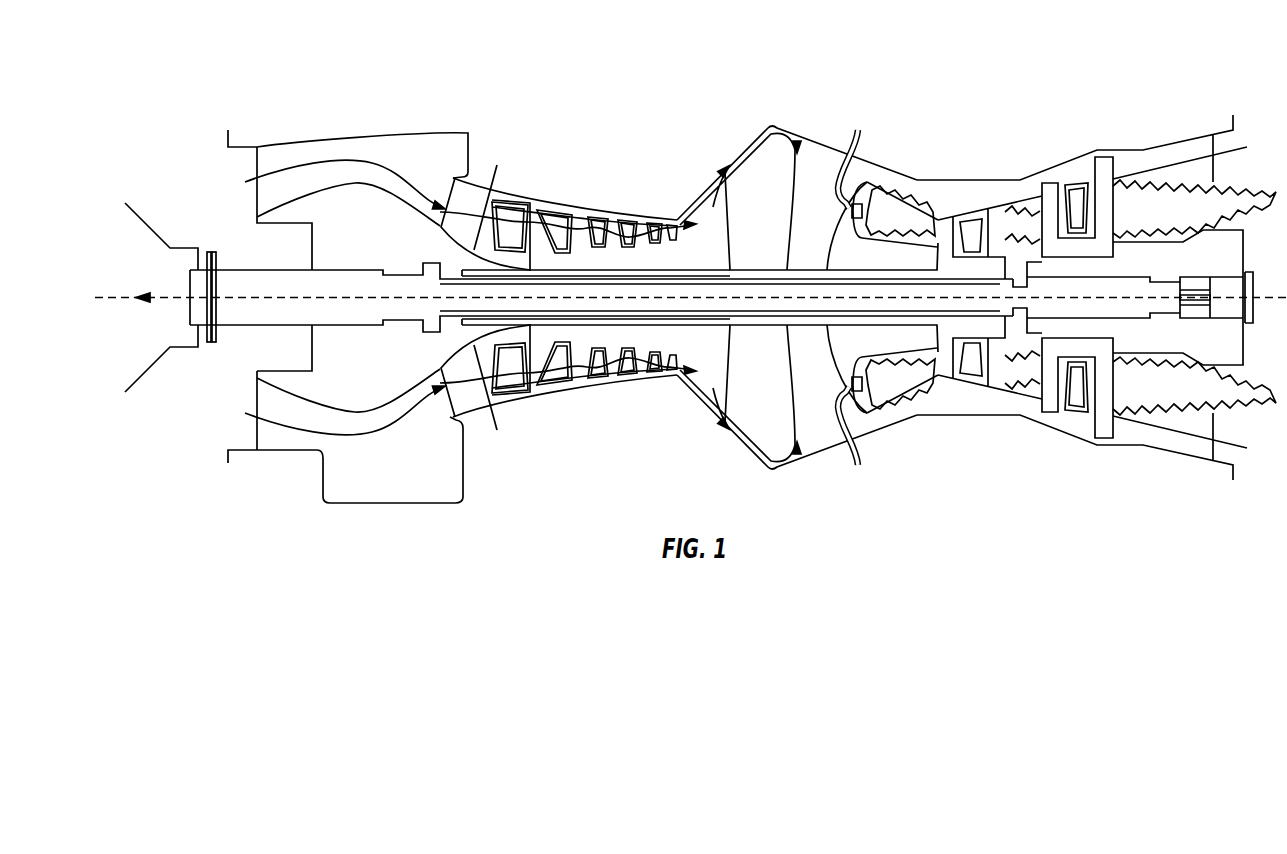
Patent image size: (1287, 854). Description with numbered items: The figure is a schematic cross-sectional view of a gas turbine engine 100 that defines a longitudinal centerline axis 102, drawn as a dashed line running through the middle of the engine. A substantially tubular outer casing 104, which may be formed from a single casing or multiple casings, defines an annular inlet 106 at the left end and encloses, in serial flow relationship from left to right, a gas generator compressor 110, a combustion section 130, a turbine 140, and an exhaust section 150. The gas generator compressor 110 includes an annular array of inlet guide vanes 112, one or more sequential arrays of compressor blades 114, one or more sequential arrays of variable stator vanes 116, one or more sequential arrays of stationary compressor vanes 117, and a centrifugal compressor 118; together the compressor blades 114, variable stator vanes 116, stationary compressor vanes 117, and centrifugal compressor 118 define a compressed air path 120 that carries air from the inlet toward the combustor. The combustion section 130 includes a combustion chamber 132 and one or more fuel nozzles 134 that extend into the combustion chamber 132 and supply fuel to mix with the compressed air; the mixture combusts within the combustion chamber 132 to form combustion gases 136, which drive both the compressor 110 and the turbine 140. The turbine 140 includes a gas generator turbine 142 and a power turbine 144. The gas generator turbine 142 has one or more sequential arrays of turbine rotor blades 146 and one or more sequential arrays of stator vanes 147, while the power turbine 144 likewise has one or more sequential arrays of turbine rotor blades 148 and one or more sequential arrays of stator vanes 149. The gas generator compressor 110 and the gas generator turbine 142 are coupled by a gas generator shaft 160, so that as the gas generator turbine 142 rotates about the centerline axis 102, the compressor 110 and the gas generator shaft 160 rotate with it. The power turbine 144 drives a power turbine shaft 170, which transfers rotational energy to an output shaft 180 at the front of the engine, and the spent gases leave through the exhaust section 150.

The gas turbine engine 100 is at (252, 502).
The centerline axis 102 is at (121, 295).
The outer casing 104 is at (555, 205).
The annular inlet 106 is at (262, 161).
The gas generator compressor 110 is at (560, 398).
The inlet guide vanes 112 is at (504, 357).
The compressor blades 114 is at (545, 210).
The variable stator vanes 116 is at (600, 383).
The stationary compressor vanes 117 is at (654, 225).
The centrifugal compressor 118 is at (697, 400).
The compressed air path 120 is at (474, 250).
The combustion section 130 is at (823, 415).
The combustion chamber 132 is at (882, 188).
The fuel nozzles 134 is at (845, 190).
The combustion gases 136 is at (907, 390).
The turbine 140 is at (1066, 425).
The gas generator turbine 142 is at (1005, 377).
The power turbine 144 is at (1120, 180).
The turbine rotor blades 146 is at (948, 222).
The stator vanes 147 is at (977, 222).
The turbine rotor blades 148 is at (1048, 182).
The stator vanes 149 is at (1078, 185).
The exhaust section 150 is at (1205, 467).
The gas generator shaft 160 is at (760, 262).
The power turbine shaft 170 is at (1122, 310).
The output shaft 180 is at (225, 277).